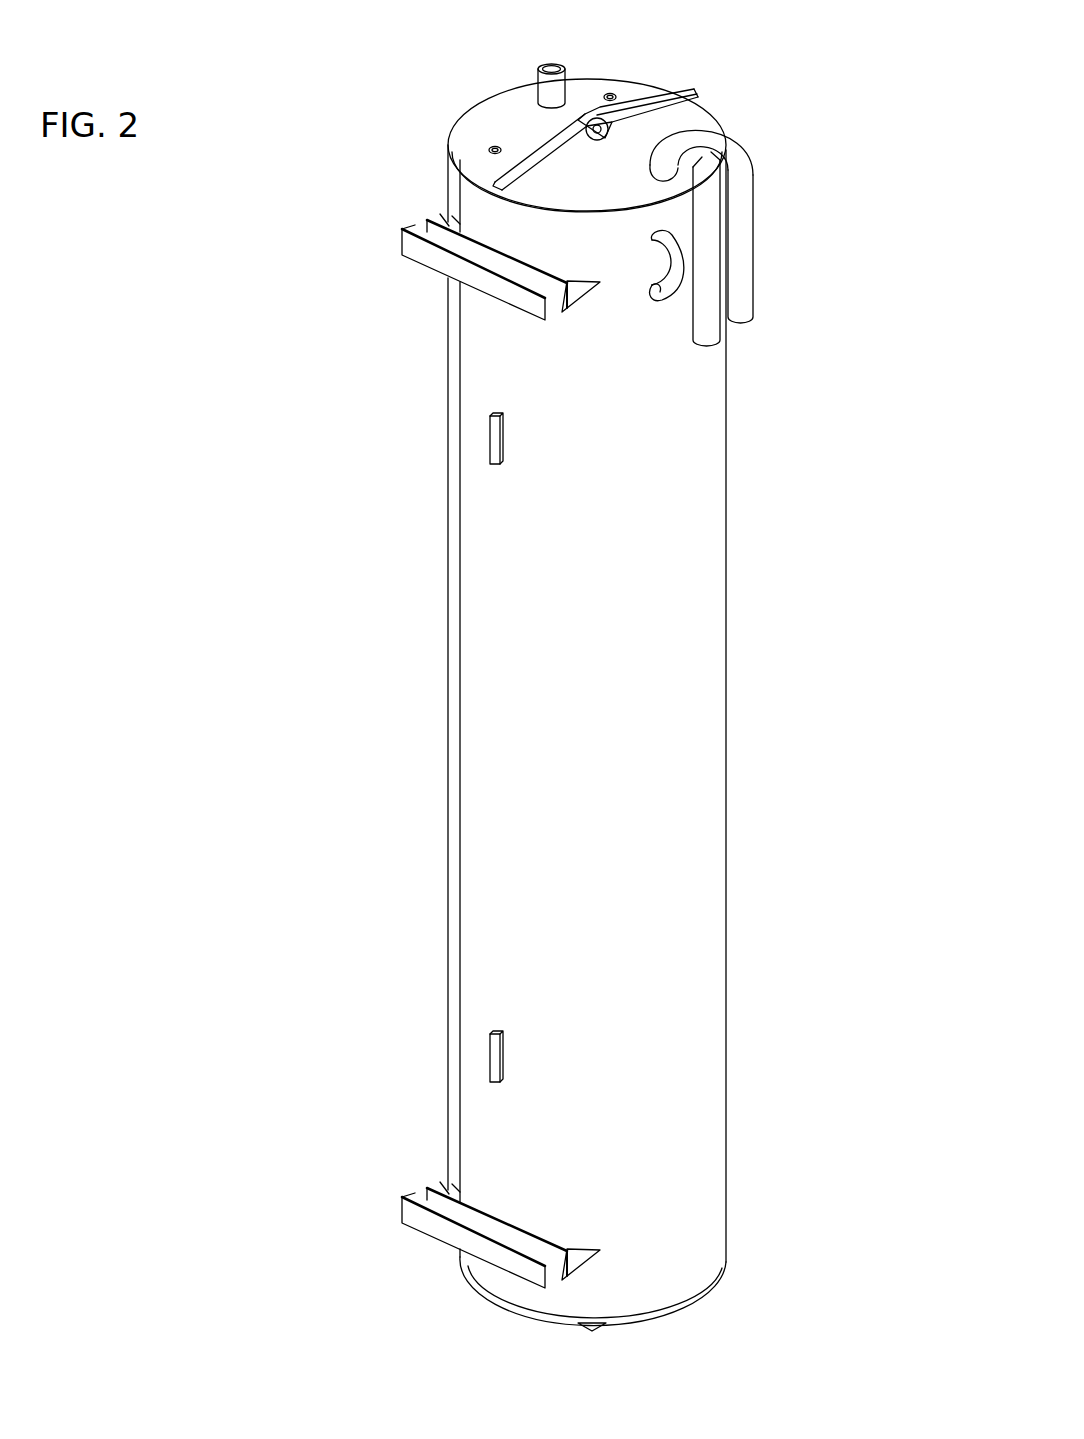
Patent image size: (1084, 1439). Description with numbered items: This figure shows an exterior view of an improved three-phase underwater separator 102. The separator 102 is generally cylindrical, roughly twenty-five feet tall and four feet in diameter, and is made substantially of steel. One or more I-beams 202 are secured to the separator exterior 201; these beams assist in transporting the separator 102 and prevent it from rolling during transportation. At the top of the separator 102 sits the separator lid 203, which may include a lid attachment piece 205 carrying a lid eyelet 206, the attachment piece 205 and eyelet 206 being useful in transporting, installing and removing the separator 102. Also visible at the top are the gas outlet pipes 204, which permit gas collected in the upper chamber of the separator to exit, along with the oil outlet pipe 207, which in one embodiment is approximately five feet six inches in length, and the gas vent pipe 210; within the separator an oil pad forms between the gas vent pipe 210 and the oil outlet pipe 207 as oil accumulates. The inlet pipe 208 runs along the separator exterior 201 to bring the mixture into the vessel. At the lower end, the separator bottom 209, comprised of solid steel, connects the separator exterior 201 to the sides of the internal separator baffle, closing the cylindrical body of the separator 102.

The three-phase underwater separator 102 is at (252, 401).
The separator exterior 201 is at (623, 700).
The I-beams 202 is at (426, 266).
The separator lid 203 is at (641, 85).
The gas outlet pipes 204 is at (716, 199).
The lid attachment piece 205 is at (498, 187).
The lid eyelet 206 is at (607, 128).
The oil outlet pipe 207 is at (553, 90).
The inlet pipe 208 is at (458, 570).
The separator bottom 209 is at (700, 1298).
The gas vent pipe 210 is at (676, 262).